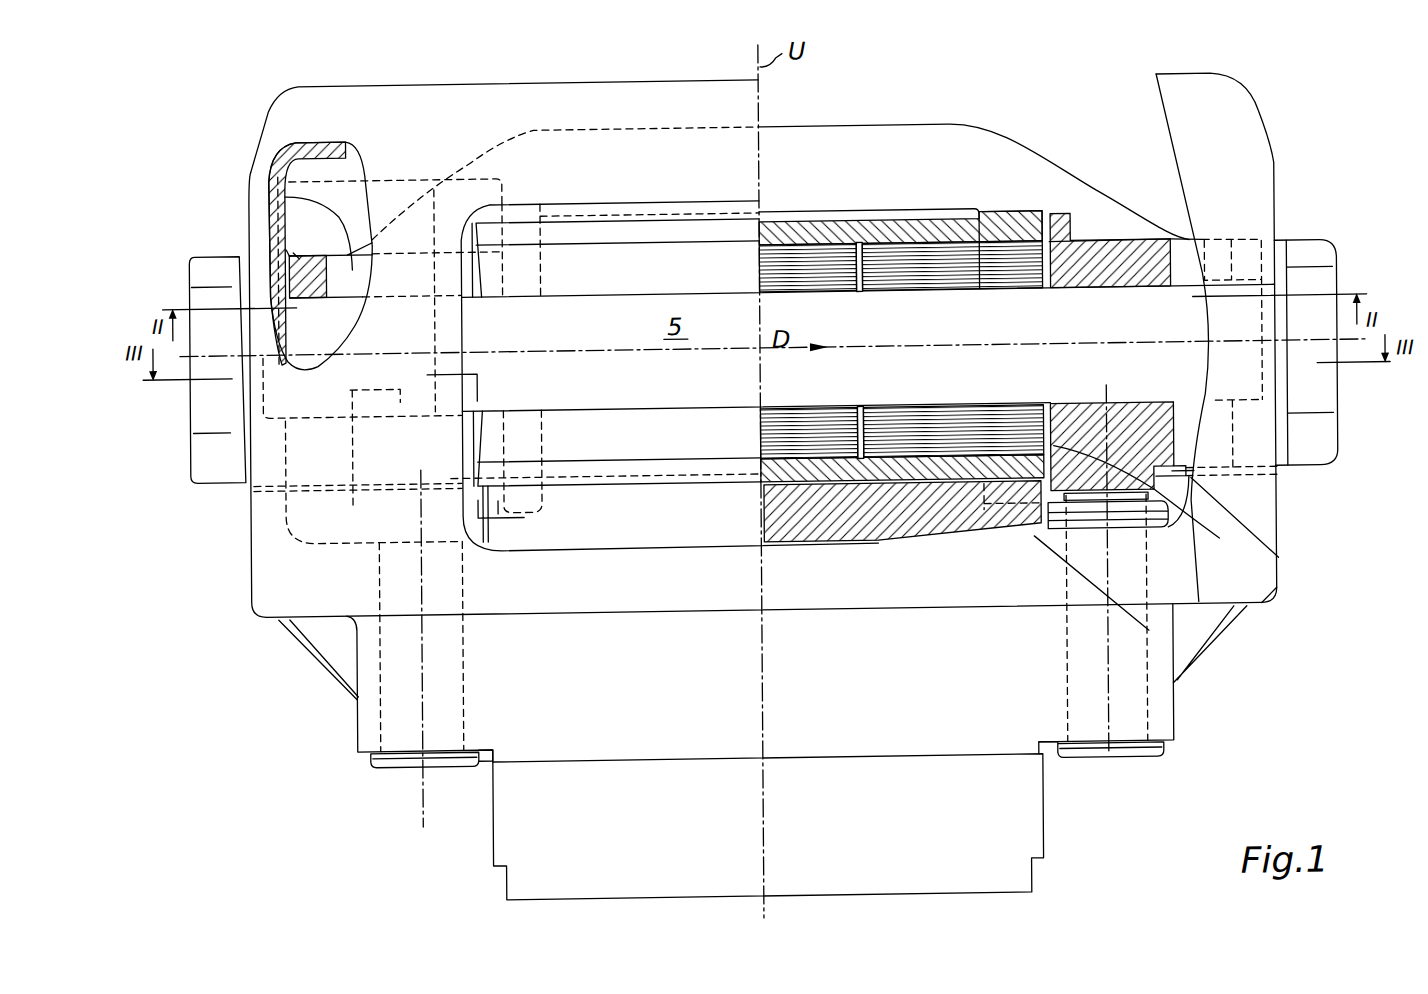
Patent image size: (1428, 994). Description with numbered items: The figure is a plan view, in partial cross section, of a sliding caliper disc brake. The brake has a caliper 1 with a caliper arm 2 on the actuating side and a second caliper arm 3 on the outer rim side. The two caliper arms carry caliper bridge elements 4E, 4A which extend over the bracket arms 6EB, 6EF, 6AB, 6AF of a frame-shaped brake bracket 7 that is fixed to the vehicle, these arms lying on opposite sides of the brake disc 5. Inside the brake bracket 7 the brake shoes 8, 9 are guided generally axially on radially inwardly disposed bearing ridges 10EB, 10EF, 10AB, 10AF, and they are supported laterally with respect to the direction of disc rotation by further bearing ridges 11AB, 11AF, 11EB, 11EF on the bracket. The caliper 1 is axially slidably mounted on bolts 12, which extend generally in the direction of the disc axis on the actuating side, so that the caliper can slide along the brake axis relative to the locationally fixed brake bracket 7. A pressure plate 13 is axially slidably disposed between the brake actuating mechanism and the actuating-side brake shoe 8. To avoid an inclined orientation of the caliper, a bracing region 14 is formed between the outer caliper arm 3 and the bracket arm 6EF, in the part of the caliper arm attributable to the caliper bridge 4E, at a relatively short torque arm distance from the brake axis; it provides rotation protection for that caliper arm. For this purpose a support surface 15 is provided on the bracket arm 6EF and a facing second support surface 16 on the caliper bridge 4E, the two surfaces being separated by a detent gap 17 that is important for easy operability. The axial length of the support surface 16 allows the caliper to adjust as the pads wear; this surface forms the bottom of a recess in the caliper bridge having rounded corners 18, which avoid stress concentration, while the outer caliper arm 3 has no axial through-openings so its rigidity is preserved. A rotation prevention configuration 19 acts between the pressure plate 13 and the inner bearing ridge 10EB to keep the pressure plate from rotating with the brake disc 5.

The caliper 1 is at (1295, 608).
The caliper arm 2 is at (995, 812).
The second caliper arm 3 is at (562, 107).
The caliper bridge element 4A is at (1245, 235).
The caliper bridge element 4E is at (263, 207).
The brake disc 5 is at (869, 382).
The bracket arm 6AB is at (1218, 545).
The bracket arm 6AF is at (1055, 240).
The bracket arm 6EB is at (407, 442).
The bracket arm 6EF is at (288, 188).
The brake bracket 7 is at (1313, 441).
The brake shoe 8 is at (873, 465).
The brake shoe 9 is at (907, 234).
The bearing ridge 10AB is at (1003, 442).
The bearing ridge 10AF is at (1003, 281).
The bearing ridge 10EB is at (520, 436).
The bearing ridge 10EF is at (525, 272).
The bearing ridge 11AB is at (1277, 565).
The bearing ridge 11AF is at (1072, 219).
The bearing ridge 11EB is at (465, 459).
The bearing ridge 11EF is at (468, 228).
The bolts 12 is at (410, 690).
The pressure plate 13 is at (940, 500).
The bracing region 14 is at (318, 176).
The support surface 15 is at (293, 274).
The second support surface 16 is at (285, 243).
The detent gap 17 is at (292, 249).
The rounded corners 18 is at (296, 151).
The rotation prevention configuration 19 is at (500, 536).